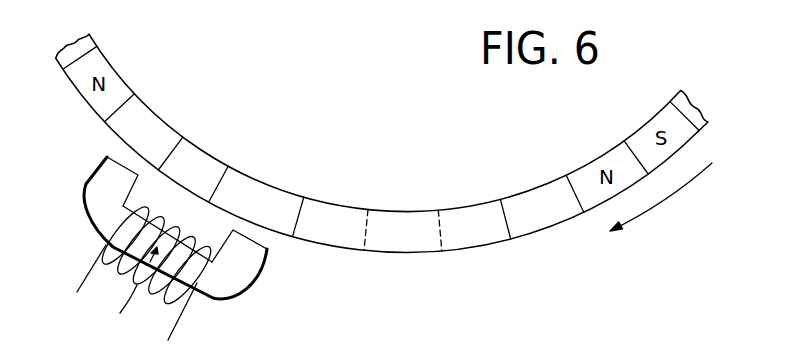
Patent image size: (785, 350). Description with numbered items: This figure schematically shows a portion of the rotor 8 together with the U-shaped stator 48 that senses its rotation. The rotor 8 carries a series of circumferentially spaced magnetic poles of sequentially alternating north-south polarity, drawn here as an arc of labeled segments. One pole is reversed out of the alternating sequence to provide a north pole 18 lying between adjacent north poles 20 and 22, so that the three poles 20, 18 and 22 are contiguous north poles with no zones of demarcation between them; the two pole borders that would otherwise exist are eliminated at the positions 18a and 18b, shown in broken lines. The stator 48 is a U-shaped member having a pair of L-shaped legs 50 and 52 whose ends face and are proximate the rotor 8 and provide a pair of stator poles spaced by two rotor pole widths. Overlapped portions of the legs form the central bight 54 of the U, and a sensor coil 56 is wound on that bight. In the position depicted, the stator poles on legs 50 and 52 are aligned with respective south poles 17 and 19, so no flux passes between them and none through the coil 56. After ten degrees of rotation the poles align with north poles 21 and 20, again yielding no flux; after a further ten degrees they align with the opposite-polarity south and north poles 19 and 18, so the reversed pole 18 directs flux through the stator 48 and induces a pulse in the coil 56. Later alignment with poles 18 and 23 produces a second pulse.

The rotor 8 is at (557, 226).
The south pole 17 is at (160, 120).
The reversed pole 18 is at (443, 229).
The eliminated pole border location 18a is at (370, 243).
The eliminated pole border location 18b is at (441, 233).
The south pole 19 is at (278, 193).
The north pole 20 is at (347, 210).
The north pole 21 is at (221, 166).
The north pole 22 is at (460, 212).
The south pole 23 is at (528, 193).
The stator 48 is at (186, 235).
The leg 50 is at (110, 168).
The leg 52 is at (247, 248).
The central bight 54 is at (137, 292).
The sensor coil 56 is at (162, 208).